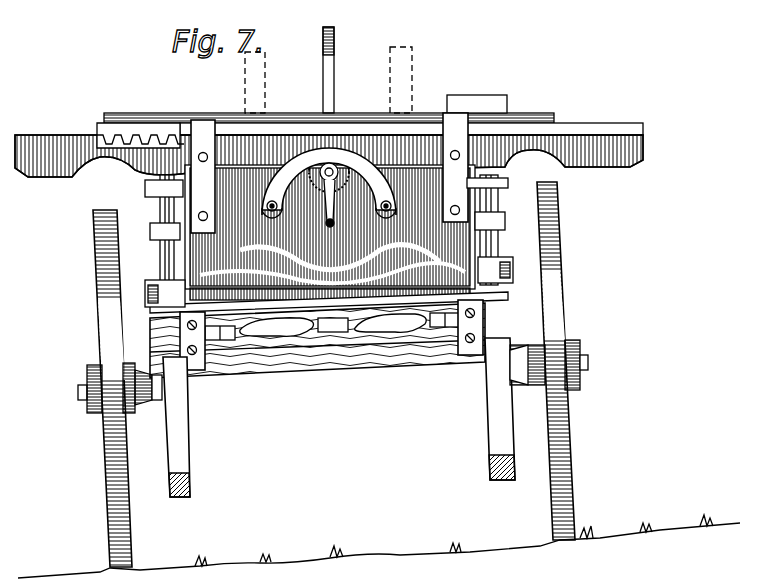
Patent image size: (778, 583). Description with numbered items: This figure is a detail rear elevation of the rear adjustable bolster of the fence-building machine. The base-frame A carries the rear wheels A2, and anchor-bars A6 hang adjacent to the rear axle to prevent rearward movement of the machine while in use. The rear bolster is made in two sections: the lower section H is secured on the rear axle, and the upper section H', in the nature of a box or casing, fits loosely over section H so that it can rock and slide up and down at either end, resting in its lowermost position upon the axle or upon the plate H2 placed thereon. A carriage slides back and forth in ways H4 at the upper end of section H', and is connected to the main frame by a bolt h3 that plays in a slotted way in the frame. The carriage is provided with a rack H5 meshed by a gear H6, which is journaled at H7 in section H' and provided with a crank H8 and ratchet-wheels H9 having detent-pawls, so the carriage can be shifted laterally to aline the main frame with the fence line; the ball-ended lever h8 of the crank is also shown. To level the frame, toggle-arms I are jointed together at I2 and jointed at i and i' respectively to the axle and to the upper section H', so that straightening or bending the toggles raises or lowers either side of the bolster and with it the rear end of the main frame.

The bolt h3 is at (356, 60).
The crank H8 is at (420, 110).
The bolster section H is at (329, 211).
The bolster section H' is at (347, 264).
The plate H2 is at (393, 298).
The rack H5 is at (133, 140).
The ways H4 is at (490, 84).
The ratchet-wheels H9 is at (313, 140).
The gear H6 is at (340, 140).
The journal H7 is at (322, 190).
The lever ball end h8 is at (333, 222).
The toggle-arm I is at (150, 205).
The joint i' is at (324, 178).
The joint I2 is at (518, 222).
The joint i is at (327, 282).
The base-frame A is at (317, 360).
The anchor-bars A6 is at (190, 480).
The rear wheels A2 is at (586, 456).